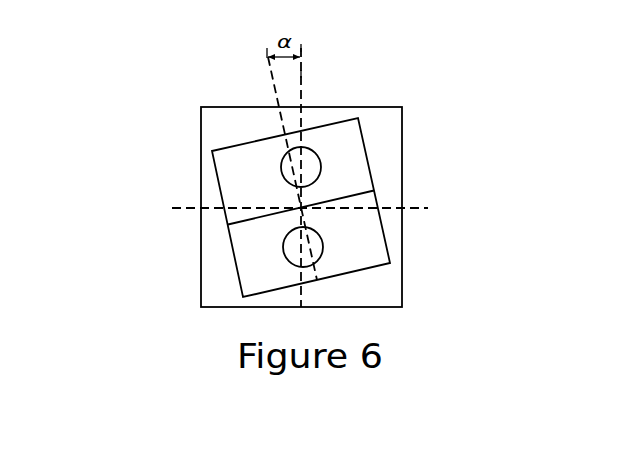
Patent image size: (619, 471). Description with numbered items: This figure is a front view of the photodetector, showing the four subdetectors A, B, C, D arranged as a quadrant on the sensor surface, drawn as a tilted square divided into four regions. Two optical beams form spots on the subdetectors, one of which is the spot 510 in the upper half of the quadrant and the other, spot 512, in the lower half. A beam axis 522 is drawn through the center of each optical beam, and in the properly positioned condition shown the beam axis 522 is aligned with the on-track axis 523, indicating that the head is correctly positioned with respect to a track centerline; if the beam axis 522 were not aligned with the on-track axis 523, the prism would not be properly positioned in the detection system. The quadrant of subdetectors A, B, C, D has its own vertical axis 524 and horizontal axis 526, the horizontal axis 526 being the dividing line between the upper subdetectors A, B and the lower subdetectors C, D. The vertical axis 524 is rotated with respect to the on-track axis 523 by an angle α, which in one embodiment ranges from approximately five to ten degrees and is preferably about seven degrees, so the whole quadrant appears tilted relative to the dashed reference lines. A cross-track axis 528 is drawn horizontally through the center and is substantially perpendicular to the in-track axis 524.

The spot 510 is at (312, 150).
The second hole 512 is at (285, 262).
The beam axis 522 is at (301, 47).
The on-track axis 523 is at (301, 74).
The vertical axis 524 is at (267, 52).
The horizontal axis 526 is at (375, 190).
The cross-track axis 528 is at (428, 206).
The subdetector A is at (218, 180).
The subdetector B is at (367, 153).
The subdetector C is at (235, 264).
The subdetector D is at (383, 225).